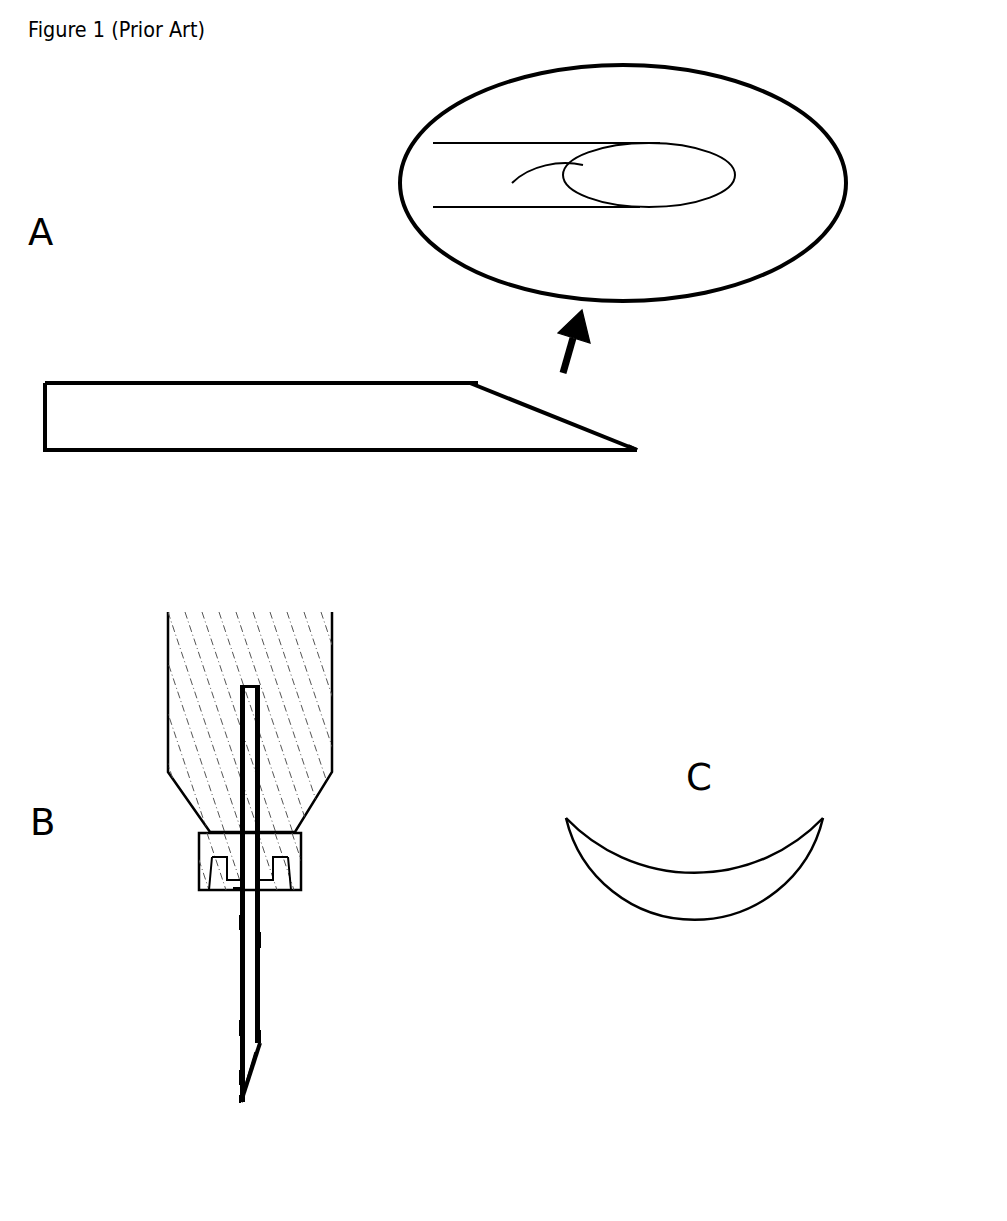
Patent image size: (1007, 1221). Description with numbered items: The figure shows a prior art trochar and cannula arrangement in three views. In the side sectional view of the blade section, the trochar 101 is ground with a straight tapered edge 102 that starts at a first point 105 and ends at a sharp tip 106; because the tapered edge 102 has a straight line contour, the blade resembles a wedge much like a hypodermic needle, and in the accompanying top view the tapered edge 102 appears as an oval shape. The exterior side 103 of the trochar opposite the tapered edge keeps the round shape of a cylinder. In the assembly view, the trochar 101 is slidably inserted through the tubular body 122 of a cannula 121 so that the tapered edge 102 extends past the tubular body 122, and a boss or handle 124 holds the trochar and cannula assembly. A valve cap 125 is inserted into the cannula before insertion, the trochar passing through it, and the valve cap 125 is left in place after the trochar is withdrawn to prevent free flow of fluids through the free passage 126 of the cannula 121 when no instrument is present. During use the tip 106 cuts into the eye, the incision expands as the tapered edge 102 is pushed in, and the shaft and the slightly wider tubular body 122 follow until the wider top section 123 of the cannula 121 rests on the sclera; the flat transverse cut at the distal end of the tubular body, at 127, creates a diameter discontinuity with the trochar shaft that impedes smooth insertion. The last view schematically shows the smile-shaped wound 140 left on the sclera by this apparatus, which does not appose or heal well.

In FIG. 1A, the trochar 101 is at (415, 450).
In FIG. 1B, the trochar 101 is at (258, 1047).
In FIG. 1A, the tapered edge 102 is at (563, 418).
In FIG. 1B, the tapered edge 102 is at (258, 1068).
In FIG. 1A, the exterior side 103 is at (567, 450).
In FIG. 1B, the exterior side 103 is at (242, 1077).
In FIG. 1A, the first point 105 is at (475, 382).
In FIG. 1A, the tip 106 is at (637, 450).
In FIG. 1B, the tip 106 is at (243, 1105).
In FIG. 1B, the cannula 121 is at (273, 903).
In FIG. 1B, the tubular body 122 is at (263, 940).
In FIG. 1B, the wider top section 123 is at (233, 888).
In FIG. 1B, the boss or handle 124 is at (332, 648).
In FIG. 1B, the valve cap 125 is at (302, 852).
In FIG. 1B, the free passage 126 is at (237, 922).
In FIG. 1B, the flat transverse cut 127 is at (237, 1028).
In FIG. 1C, the smile-shaped wound 140 is at (685, 920).